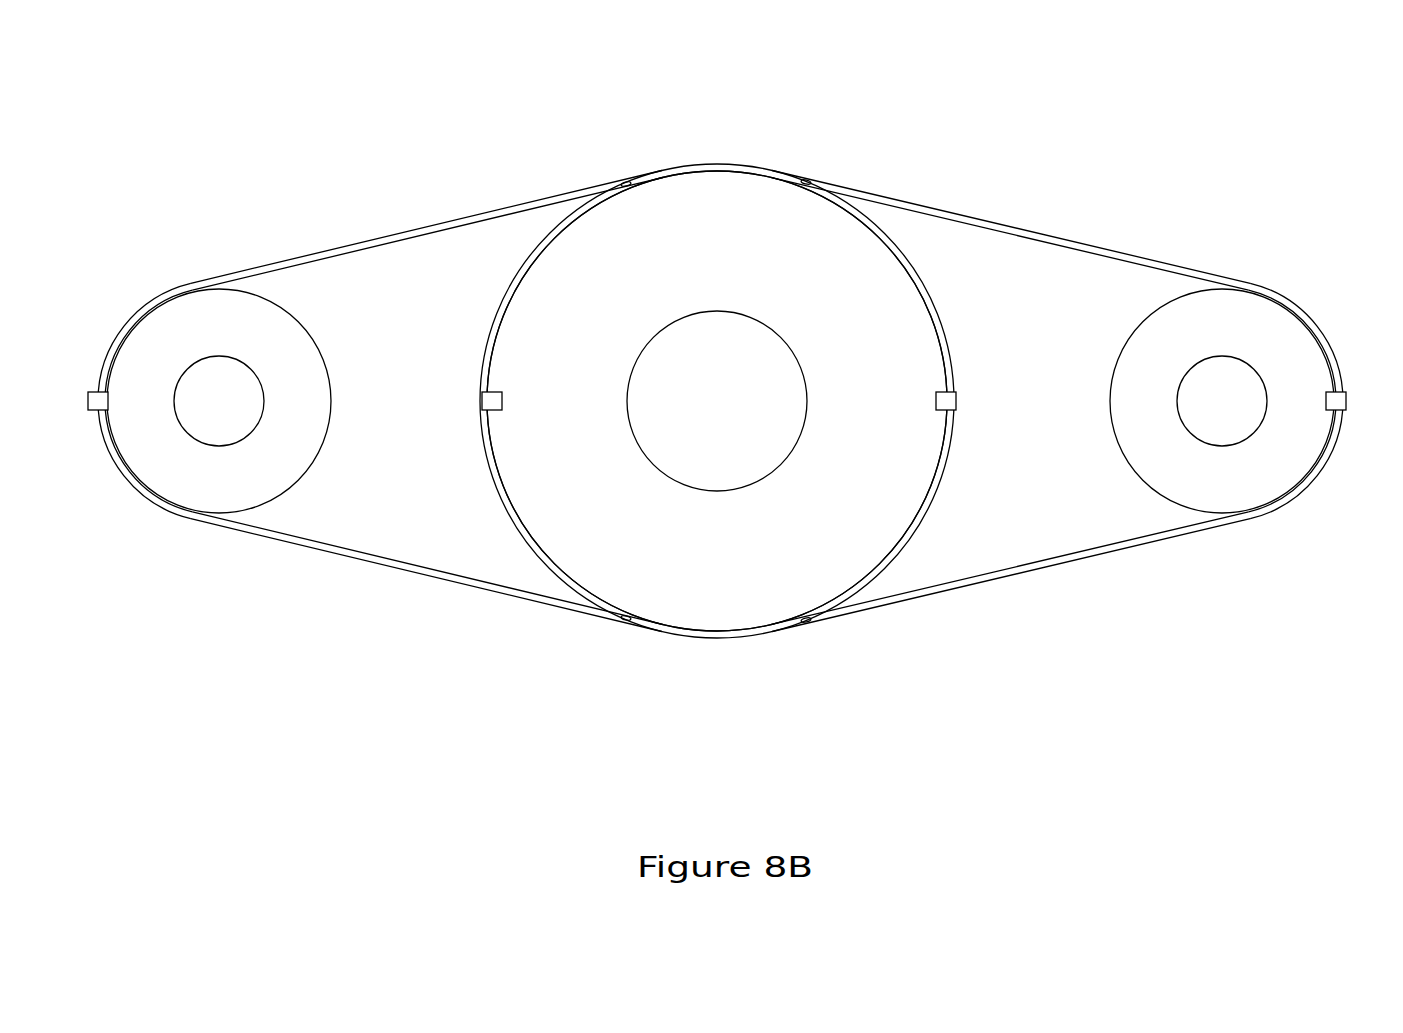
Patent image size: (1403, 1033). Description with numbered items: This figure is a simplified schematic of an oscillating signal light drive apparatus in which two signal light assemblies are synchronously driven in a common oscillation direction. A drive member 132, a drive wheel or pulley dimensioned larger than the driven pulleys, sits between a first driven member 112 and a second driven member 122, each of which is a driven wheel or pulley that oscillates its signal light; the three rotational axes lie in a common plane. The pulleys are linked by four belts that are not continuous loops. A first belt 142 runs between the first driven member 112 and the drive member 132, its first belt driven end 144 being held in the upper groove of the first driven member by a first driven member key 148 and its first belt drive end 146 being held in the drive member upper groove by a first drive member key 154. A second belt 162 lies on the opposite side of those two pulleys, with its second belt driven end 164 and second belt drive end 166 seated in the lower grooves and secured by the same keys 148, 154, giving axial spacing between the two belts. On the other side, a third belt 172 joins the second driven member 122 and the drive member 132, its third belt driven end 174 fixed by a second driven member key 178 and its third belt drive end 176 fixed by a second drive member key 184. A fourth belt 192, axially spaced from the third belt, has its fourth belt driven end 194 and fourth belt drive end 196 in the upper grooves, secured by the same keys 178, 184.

The first driven member 112 is at (195, 320).
The second driven member 122 is at (1237, 312).
The drive member 132 is at (716, 232).
The first belt 142 is at (368, 558).
The first belt driven end 144 is at (108, 440).
The first belt drive end 146 is at (942, 418).
The first driven member key 148 is at (88, 400).
The first drive member key 154 is at (956, 400).
The second belt 162 is at (404, 232).
The second belt driven end 164 is at (115, 342).
The second belt drive end 166 is at (940, 392).
The third belt 172 is at (1060, 560).
The third belt driven end 174 is at (1330, 445).
The third belt drive end 176 is at (488, 417).
The second driven member key 178 is at (1346, 403).
The second drive member key 184 is at (482, 400).
The fourth belt 192 is at (1070, 237).
The fourth belt driven end 194 is at (1347, 385).
The fourth belt drive end 196 is at (488, 388).